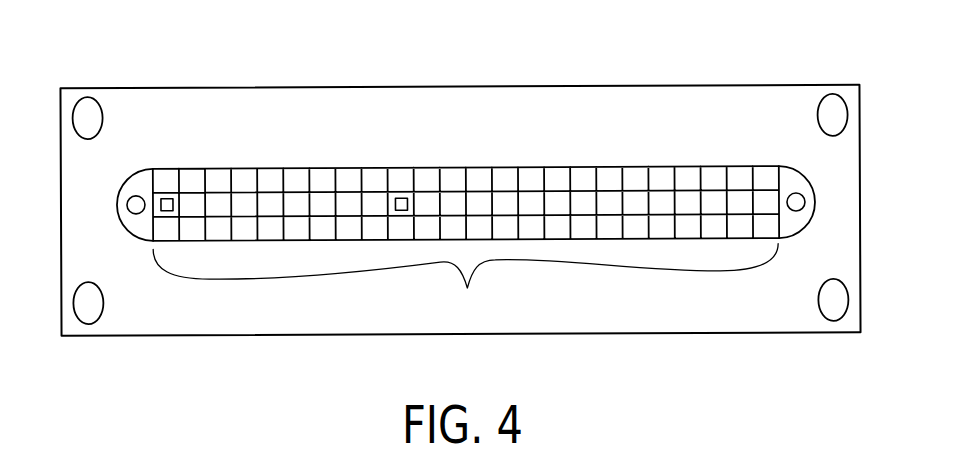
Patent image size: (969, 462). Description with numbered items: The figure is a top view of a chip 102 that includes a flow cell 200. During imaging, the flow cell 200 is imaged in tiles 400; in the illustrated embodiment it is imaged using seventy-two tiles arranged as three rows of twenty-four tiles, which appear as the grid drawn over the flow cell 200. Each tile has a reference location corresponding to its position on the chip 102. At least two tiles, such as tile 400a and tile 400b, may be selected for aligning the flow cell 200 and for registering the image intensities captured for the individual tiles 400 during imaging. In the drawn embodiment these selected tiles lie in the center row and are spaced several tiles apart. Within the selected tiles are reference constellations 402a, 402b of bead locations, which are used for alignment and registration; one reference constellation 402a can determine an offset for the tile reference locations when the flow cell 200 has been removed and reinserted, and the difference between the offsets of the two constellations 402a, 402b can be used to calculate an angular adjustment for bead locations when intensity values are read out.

The chip 102 is at (268, 86).
The flow cell 200 is at (685, 167).
The tiles 400 is at (465, 283).
The tile 400a is at (165, 190).
The tile 400b is at (388, 204).
The reference constellation 402a is at (173, 204).
The reference constellation 402b is at (402, 198).